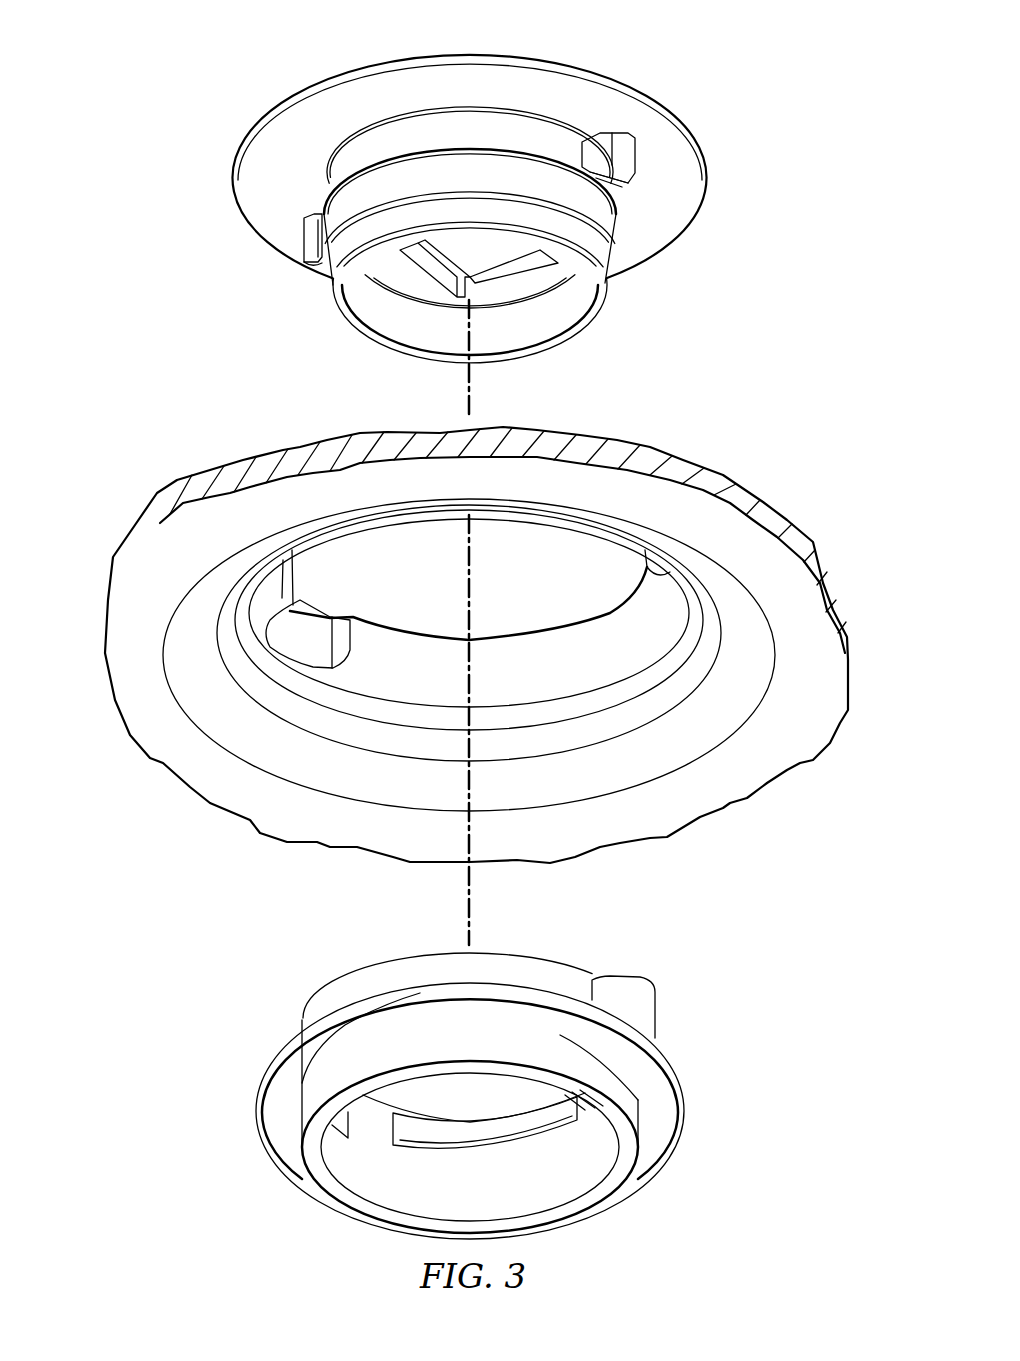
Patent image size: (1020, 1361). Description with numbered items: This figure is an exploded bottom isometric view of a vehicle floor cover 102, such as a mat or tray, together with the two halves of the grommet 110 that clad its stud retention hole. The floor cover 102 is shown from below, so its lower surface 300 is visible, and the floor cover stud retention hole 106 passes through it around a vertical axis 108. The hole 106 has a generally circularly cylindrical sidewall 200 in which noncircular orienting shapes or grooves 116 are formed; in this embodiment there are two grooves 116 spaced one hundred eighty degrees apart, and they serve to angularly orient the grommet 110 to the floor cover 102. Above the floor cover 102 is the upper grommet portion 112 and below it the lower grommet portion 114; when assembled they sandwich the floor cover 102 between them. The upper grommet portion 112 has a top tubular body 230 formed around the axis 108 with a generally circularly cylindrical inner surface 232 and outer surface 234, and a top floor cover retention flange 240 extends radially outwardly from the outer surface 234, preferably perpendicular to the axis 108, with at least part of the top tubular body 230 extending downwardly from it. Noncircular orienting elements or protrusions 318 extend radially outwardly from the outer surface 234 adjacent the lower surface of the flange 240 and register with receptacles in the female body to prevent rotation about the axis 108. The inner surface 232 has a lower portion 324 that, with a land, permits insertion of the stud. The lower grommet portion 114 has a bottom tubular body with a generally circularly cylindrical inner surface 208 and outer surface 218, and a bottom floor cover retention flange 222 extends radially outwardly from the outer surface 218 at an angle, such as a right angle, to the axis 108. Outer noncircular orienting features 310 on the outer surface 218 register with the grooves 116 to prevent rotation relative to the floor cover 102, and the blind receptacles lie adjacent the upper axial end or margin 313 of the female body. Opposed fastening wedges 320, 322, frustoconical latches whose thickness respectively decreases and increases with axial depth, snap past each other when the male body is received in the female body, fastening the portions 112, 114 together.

The vehicle floor cover 102 is at (92, 540).
The floor cover stud retention hole 106 is at (538, 582).
The vertical axis 108 is at (466, 876).
The grommet 110 is at (182, 158).
The upper grommet portion 112 is at (208, 196).
The lower grommet portion 114 is at (258, 1164).
The groove 116 is at (315, 622).
The sidewall 200 is at (581, 625).
The inner surface 208 is at (585, 1190).
The outer surface 218 is at (346, 989).
The bottom floor cover retention flange 222 is at (665, 1043).
The top tubular body 230 is at (443, 118).
The inner surface 232 is at (545, 318).
The outer surface 234 is at (368, 145).
The top floor cover retention flange 240 is at (575, 63).
The lower surface 300 is at (713, 797).
The outer noncircular orienting feature 310 is at (617, 975).
The upper axial end or margin 313 is at (378, 966).
The noncircular orienting element or protrusion 318 is at (627, 150).
The fastening wedge 320 is at (612, 233).
The fastening wedge 322 is at (493, 1137).
The lower portion 324 is at (497, 345).